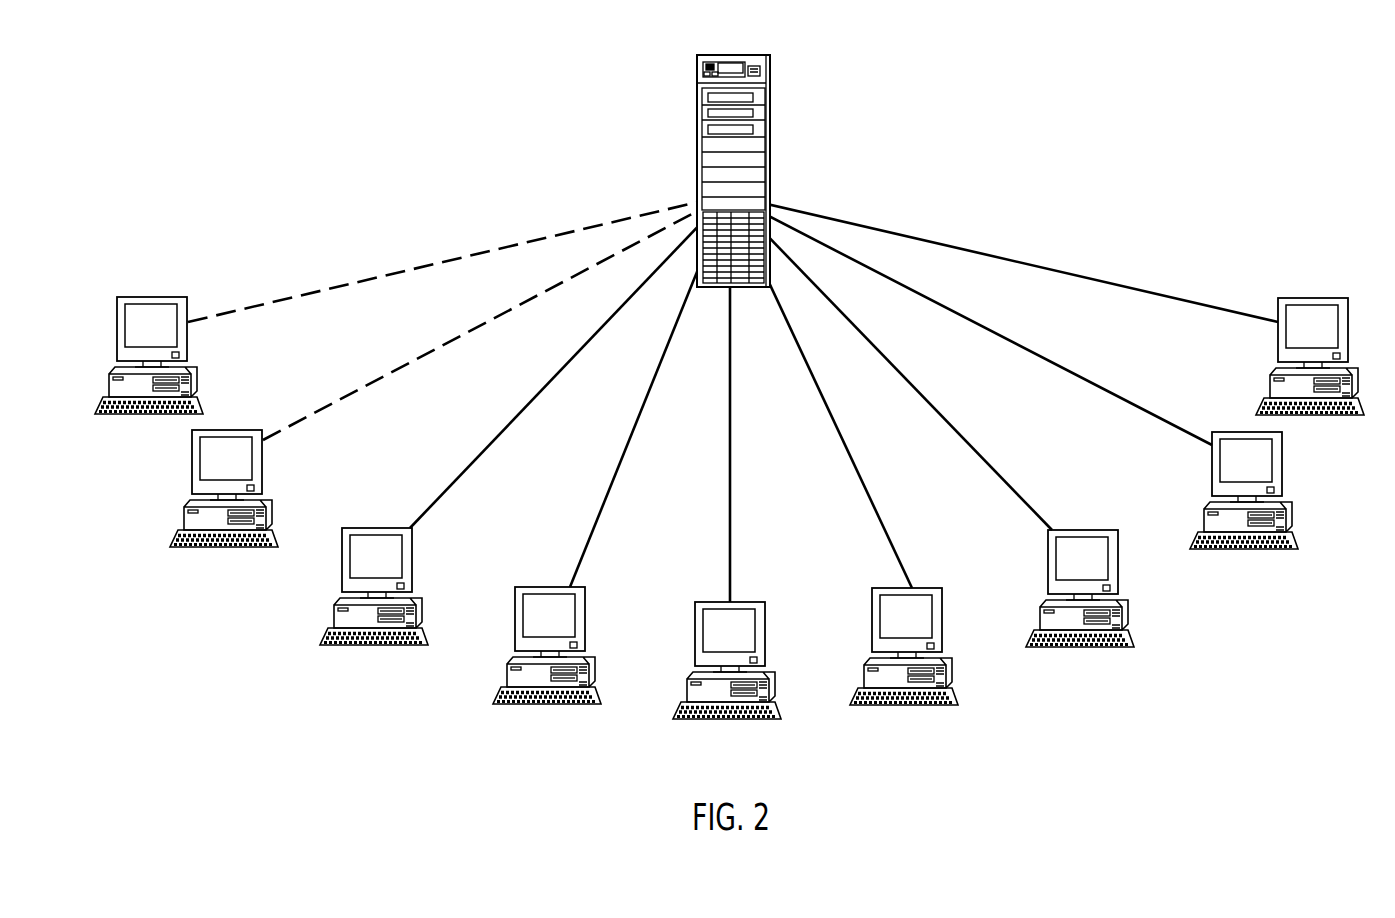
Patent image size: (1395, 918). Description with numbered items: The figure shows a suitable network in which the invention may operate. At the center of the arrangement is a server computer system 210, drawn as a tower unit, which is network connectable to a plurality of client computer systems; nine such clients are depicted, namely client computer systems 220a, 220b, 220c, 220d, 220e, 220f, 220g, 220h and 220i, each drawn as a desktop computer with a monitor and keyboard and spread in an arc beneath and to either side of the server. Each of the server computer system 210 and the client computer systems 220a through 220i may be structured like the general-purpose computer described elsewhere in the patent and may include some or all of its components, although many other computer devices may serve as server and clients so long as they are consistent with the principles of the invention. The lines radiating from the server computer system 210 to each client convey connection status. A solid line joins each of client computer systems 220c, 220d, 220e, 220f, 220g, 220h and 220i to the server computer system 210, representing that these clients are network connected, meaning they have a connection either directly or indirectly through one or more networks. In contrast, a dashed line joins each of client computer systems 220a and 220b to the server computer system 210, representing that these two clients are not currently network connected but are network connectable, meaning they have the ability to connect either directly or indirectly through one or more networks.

The server computer system 210 is at (770, 141).
The client computer system 220a is at (148, 415).
The client computer system 220b is at (221, 547).
The client computer system 220c is at (362, 645).
The client computer system 220d is at (553, 704).
The client computer system 220e is at (723, 719).
The client computer system 220f is at (912, 705).
The client computer system 220g is at (1082, 647).
The client computer system 220h is at (1245, 549).
The client computer system 220i is at (1325, 415).